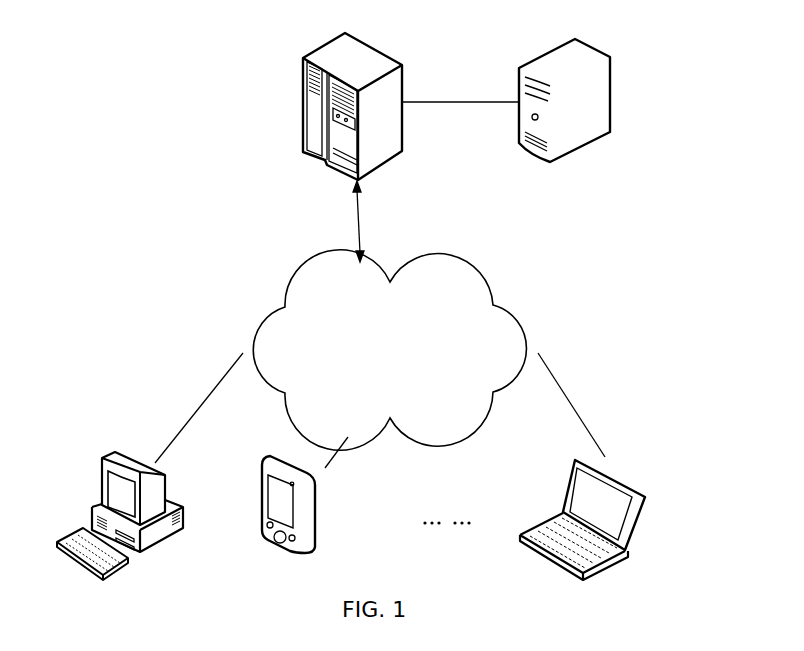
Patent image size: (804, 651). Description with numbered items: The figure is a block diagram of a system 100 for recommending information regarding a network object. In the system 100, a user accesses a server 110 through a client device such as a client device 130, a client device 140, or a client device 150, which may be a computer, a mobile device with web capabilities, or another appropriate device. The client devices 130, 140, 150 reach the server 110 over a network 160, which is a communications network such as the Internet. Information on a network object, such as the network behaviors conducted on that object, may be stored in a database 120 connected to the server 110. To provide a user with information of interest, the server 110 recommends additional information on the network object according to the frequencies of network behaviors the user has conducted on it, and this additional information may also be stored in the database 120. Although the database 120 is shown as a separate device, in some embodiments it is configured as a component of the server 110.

The system 100 is at (194, 214).
The server 110 is at (300, 80).
The database 120 is at (598, 50).
The client device 130 is at (98, 478).
The client device 140 is at (262, 477).
The client device 150 is at (632, 468).
The network 160 is at (503, 307).